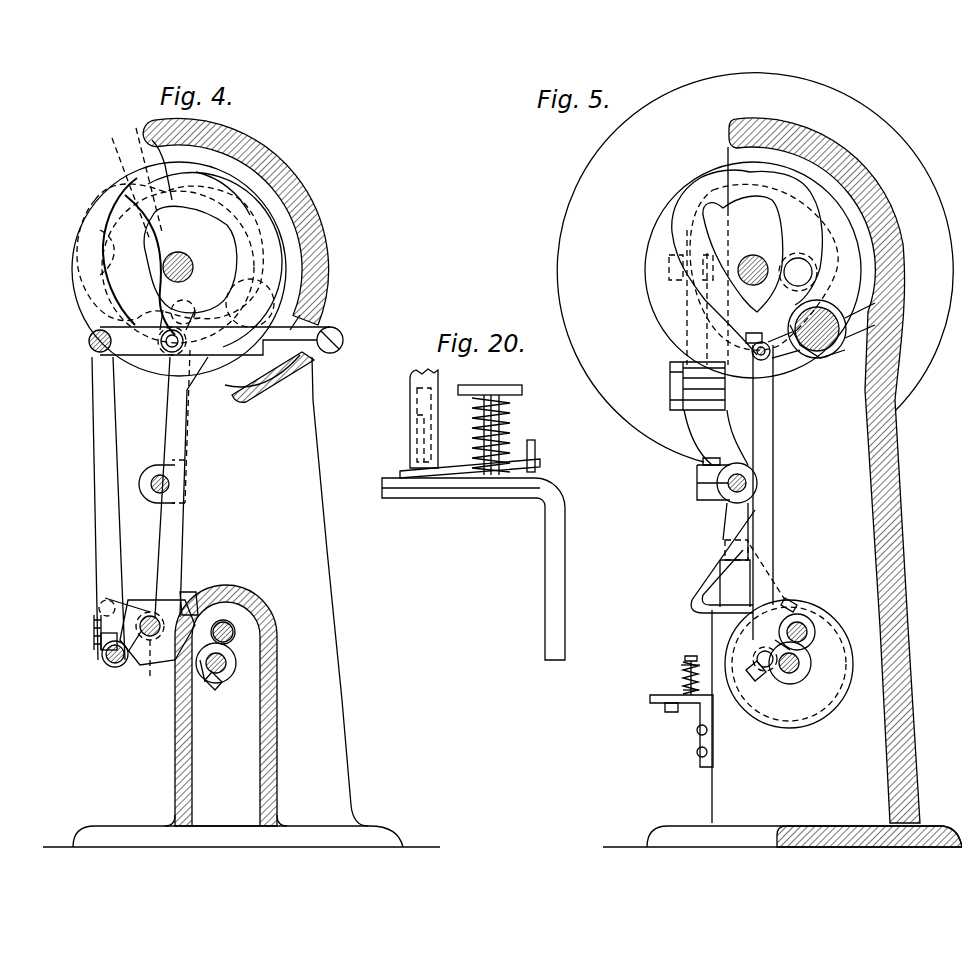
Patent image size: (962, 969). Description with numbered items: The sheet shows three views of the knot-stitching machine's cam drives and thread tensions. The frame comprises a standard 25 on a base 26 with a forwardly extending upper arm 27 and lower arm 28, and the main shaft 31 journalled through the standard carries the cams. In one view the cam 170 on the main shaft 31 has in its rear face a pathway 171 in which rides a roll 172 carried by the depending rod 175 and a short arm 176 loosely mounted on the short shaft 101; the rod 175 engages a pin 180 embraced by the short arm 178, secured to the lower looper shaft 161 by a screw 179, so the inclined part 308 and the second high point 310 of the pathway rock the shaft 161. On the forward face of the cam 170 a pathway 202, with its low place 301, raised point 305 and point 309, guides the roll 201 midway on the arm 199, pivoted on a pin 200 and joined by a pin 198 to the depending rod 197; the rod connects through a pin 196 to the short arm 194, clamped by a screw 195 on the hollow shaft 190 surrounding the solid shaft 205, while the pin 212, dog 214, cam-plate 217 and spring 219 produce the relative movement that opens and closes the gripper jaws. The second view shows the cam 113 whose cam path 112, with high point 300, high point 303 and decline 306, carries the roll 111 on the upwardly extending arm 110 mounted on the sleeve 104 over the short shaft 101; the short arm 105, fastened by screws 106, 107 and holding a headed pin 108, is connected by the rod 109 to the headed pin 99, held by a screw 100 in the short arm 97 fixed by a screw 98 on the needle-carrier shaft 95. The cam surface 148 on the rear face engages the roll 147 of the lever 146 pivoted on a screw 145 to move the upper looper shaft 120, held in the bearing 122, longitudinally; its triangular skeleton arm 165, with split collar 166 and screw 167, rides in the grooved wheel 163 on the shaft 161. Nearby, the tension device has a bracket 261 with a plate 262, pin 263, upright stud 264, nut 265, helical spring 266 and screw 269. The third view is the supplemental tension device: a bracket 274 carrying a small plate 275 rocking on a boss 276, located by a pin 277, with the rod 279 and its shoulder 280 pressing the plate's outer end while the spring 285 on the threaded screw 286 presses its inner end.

In FIG. 4, the standard 25 is at (330, 558).
In FIG. 5, the standard 25 is at (903, 517).
In FIG. 4, the base 26 is at (385, 826).
In FIG. 5, the base 26 is at (805, 826).
In FIG. 4, the upper arm 27 is at (333, 267).
In FIG. 4, the lower arm 28 is at (272, 617).
In FIG. 4, the main shaft 31 is at (186, 262).
In FIG. 5, the main shaft 31 is at (754, 258).
In FIG. 4, the shaft 95 is at (231, 622).
In FIG. 5, the shaft 95 is at (812, 626).
In FIG. 5, the short arm 97 is at (802, 660).
In FIG. 5, the screw 98 is at (795, 605).
In FIG. 5, the headed pin 99 is at (764, 667).
In FIG. 5, the screw 100 is at (762, 670).
In FIG. 4, the short shaft 101 is at (300, 297).
In FIG. 5, the short shaft 101 is at (843, 332).
In FIG. 5, the sleeve 104 is at (846, 350).
In FIG. 5, the short arm 105 is at (836, 360).
In FIG. 5, the screw 106 is at (842, 305).
In FIG. 5, the screw 107 is at (758, 334).
In FIG. 5, the headed pin 108 is at (766, 360).
In FIG. 5, the rod 109 is at (767, 521).
In FIG. 5, the upwardly extending arm 110 is at (817, 283).
In FIG. 5, the roll 111 is at (813, 264).
In FIG. 5, the cam path 112 is at (805, 230).
In FIG. 5, the cam 113 is at (830, 195).
In FIG. 4, the shaft 120 is at (159, 494).
In FIG. 5, the shaft 120 is at (748, 483).
In FIG. 4, the bearing 122 is at (158, 470).
In FIG. 5, the screw 145 is at (670, 400).
In FIG. 5, the lever 146 is at (695, 420).
In FIG. 5, the roll 147 is at (668, 262).
In FIG. 5, the cam surface 148 is at (683, 242).
In FIG. 4, the shaft 161 is at (225, 672).
In FIG. 5, the shaft 161 is at (803, 670).
In FIG. 5, the wheel 163 is at (828, 725).
In FIG. 5, the triangular skeleton arm 165 is at (710, 578).
In FIG. 5, the split collar 166 is at (698, 490).
In FIG. 5, the screw 167 is at (703, 462).
In FIG. 4, the cam 170 is at (93, 206).
In FIG. 4, the pathway 171 is at (92, 246).
In FIG. 4, the roll 172 is at (170, 256).
In FIG. 4, the depending rod 175 is at (196, 453).
In FIG. 4, the short arm 176 is at (292, 268).
In FIG. 4, the short arm 178 is at (199, 660).
In FIG. 4, the screw 179 is at (205, 690).
In FIG. 4, the pin 180 is at (146, 675).
In FIG. 4, the hollow shaft 190 is at (149, 614).
In FIG. 4, the short arm 194 is at (133, 666).
In FIG. 4, the screw 195 is at (184, 593).
In FIG. 4, the pin 196 is at (113, 666).
In FIG. 4, the depending rod 197 is at (100, 494).
In FIG. 4, the pin 198 is at (90, 352).
In FIG. 4, the arm 199 is at (92, 330).
In FIG. 4, the pin 200 is at (343, 342).
In FIG. 4, the roll 201 is at (170, 353).
In FIG. 4, the pathway 202 is at (240, 208).
In FIG. 4, the solid shaft 205 is at (157, 600).
In FIG. 4, the pin 212 is at (100, 643).
In FIG. 4, the dog 214 is at (98, 610).
In FIG. 4, the cam-plate 217 is at (128, 604).
In FIG. 4, the spring 219 is at (92, 628).
In FIG. 5, the bracket 261 is at (700, 745).
In FIG. 5, the plate 262 is at (668, 695).
In FIG. 5, the pin 263 is at (650, 698).
In FIG. 5, the upright stud 264 is at (700, 672).
In FIG. 5, the nut 265 is at (690, 655).
In FIG. 5, the helical spring 266 is at (682, 675).
In FIG. 5, the screw 269 is at (672, 706).
In FIG. 20, the bracket 274 is at (562, 478).
In FIG. 20, the small plate 275 is at (513, 465).
In FIG. 20, the boss 276 is at (455, 480).
In FIG. 20, the pin 277 is at (537, 450).
In FIG. 20, the rod 279 is at (408, 367).
In FIG. 20, the shoulder 280 is at (408, 458).
In FIG. 20, the spring 285 is at (507, 413).
In FIG. 20, the threaded screw 286 is at (490, 386).
In FIG. 5, the high point 300 is at (779, 200).
In FIG. 4, the low place 301 is at (235, 273).
In FIG. 5, the high point 303 is at (703, 215).
In FIG. 4, the raised point 305 is at (232, 240).
In FIG. 5, the decline 306 is at (710, 245).
In FIG. 4, the inclined part 308 is at (133, 170).
In FIG. 4, the point 309 is at (137, 189).
In FIG. 4, the second high point 310 is at (90, 278).